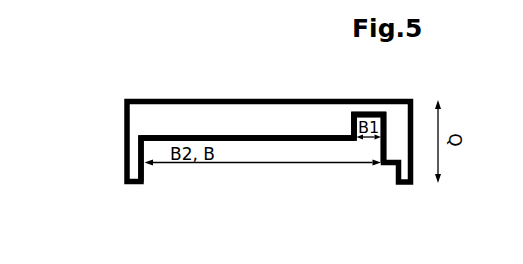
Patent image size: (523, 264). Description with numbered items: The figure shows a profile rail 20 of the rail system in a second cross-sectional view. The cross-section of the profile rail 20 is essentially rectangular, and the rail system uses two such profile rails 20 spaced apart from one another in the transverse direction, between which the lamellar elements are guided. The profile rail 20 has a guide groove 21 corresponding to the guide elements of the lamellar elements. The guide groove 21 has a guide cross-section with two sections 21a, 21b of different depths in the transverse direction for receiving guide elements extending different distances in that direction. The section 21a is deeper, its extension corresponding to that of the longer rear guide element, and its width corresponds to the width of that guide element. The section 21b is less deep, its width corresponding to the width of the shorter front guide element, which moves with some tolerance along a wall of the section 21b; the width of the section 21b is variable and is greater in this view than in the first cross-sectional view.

The profile rail 20 is at (95, 97).
The guide groove 21 is at (262, 152).
The section of the guide groove 21a is at (347, 106).
The section of the guide groove 21b is at (314, 139).